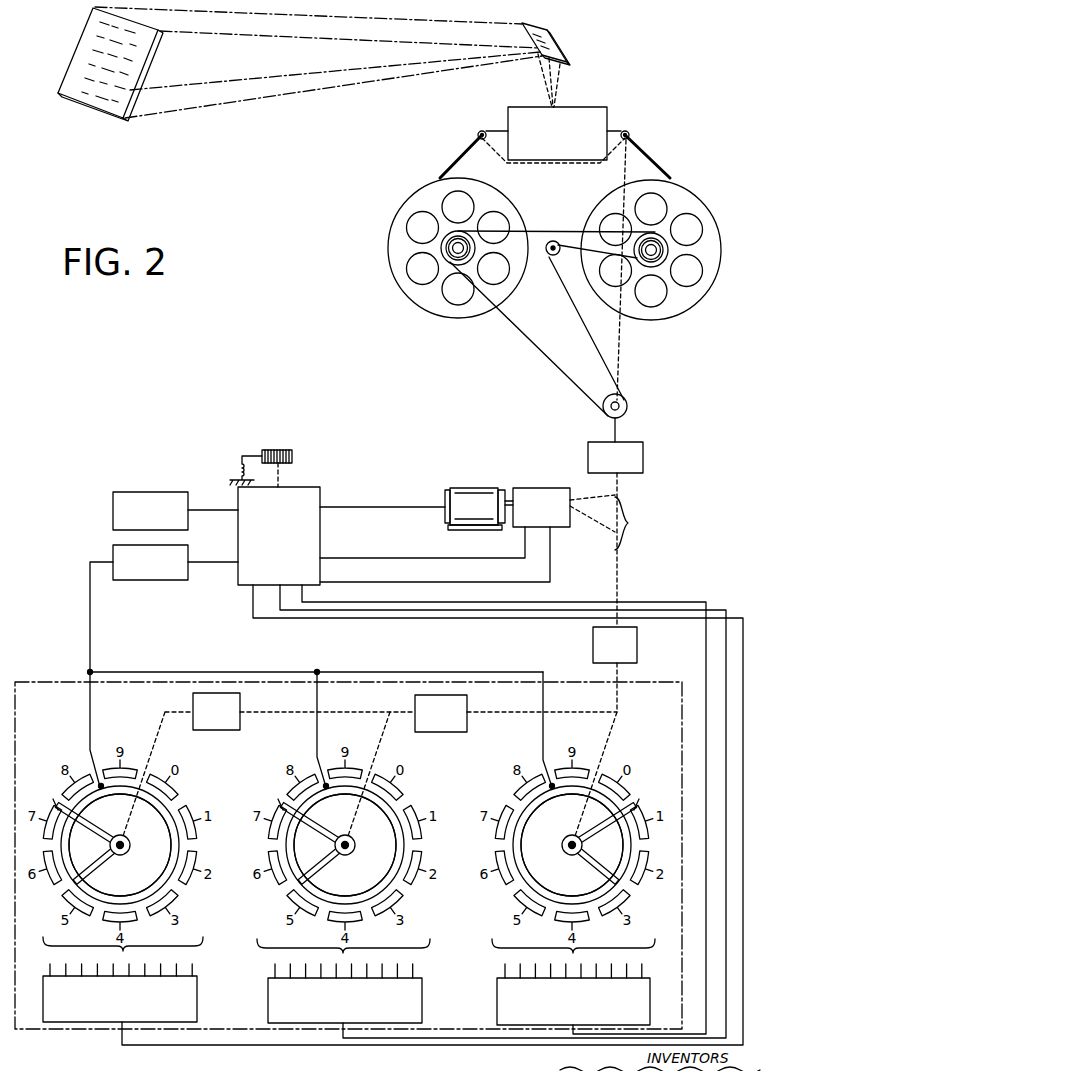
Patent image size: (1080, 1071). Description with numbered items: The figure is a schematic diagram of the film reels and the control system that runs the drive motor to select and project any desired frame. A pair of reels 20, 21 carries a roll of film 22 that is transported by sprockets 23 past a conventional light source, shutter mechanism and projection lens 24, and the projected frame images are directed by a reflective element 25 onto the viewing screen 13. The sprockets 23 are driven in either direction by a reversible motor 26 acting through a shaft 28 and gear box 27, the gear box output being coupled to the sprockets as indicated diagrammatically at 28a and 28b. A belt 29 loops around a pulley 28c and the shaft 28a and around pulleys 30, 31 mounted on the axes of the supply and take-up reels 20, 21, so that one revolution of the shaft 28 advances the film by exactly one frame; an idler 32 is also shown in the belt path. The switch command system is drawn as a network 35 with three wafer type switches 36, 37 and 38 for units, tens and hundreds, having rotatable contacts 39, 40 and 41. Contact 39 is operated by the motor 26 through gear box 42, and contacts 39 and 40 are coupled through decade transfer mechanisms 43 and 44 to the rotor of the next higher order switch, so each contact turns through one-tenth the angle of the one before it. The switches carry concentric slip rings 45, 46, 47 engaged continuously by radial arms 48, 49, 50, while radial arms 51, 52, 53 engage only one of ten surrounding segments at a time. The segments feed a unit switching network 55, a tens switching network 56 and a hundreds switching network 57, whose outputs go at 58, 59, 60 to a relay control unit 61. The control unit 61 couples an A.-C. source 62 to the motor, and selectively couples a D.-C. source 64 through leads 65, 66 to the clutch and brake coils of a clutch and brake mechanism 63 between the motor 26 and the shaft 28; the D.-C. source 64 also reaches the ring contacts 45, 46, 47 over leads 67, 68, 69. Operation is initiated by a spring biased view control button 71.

The viewing screen 13 is at (142, 58).
The reflective element 25 is at (558, 43).
The light source, shutter mechanism and projection lens 24 is at (600, 107).
The sprockets 23 is at (479, 133).
The roll of film 22 is at (456, 160).
The shaft coupling gear box output to sprockets 28a is at (655, 165).
The coupling from gear box to sprockets 28b is at (508, 163).
The pulley 28c is at (624, 400).
The shaft 28 is at (620, 428).
The supply reel 20 is at (388, 231).
The take-up reel 21 is at (720, 241).
The pulley 30 is at (463, 240).
The pulley 31 is at (657, 252).
The idler roller 32 is at (553, 241).
The belt 29 is at (597, 352).
The gear box 27 is at (643, 462).
The reversible motor 26 is at (477, 487).
The clutch and brake mechanism 63 is at (548, 487).
The view control button 71 is at (292, 455).
The relay control unit 61 is at (313, 487).
The A.-C. source 62 is at (147, 492).
The D.-C. source 64 is at (118, 545).
The lead 65 is at (388, 558).
The lead 66 is at (475, 581).
The lead 69 is at (92, 632).
The lead 68 is at (320, 703).
The lead 67 is at (545, 704).
The output lead 58 is at (658, 602).
The output lead 59 is at (718, 610).
The output lead 60 is at (743, 650).
The gear box 42 is at (637, 647).
The decade transfer mechanism 43 is at (468, 706).
The decade transfer mechanism 44 is at (242, 702).
The wafer type switch 38 is at (120, 860).
The wafer type switch 37 is at (345, 861).
The wafer type switch 36 is at (572, 861).
The rotatable contact 41 is at (128, 840).
The rotatable contact 40 is at (358, 848).
The rotatable contact 39 is at (566, 838).
The slip ring 47 is at (166, 868).
The slip ring 46 is at (390, 880).
The slip ring 45 is at (625, 858).
The radial arm 50 is at (102, 860).
The radial arm 49 is at (326, 861).
The radial arm 48 is at (600, 872).
The radial arm 53 is at (90, 822).
The radial arm 52 is at (315, 823).
The radial arm 51 is at (612, 826).
The hundreds switching network 57 is at (197, 1000).
The tens switching network 56 is at (422, 1000).
The unit switching network 55 is at (650, 1010).
The network 35 is at (25, 1031).